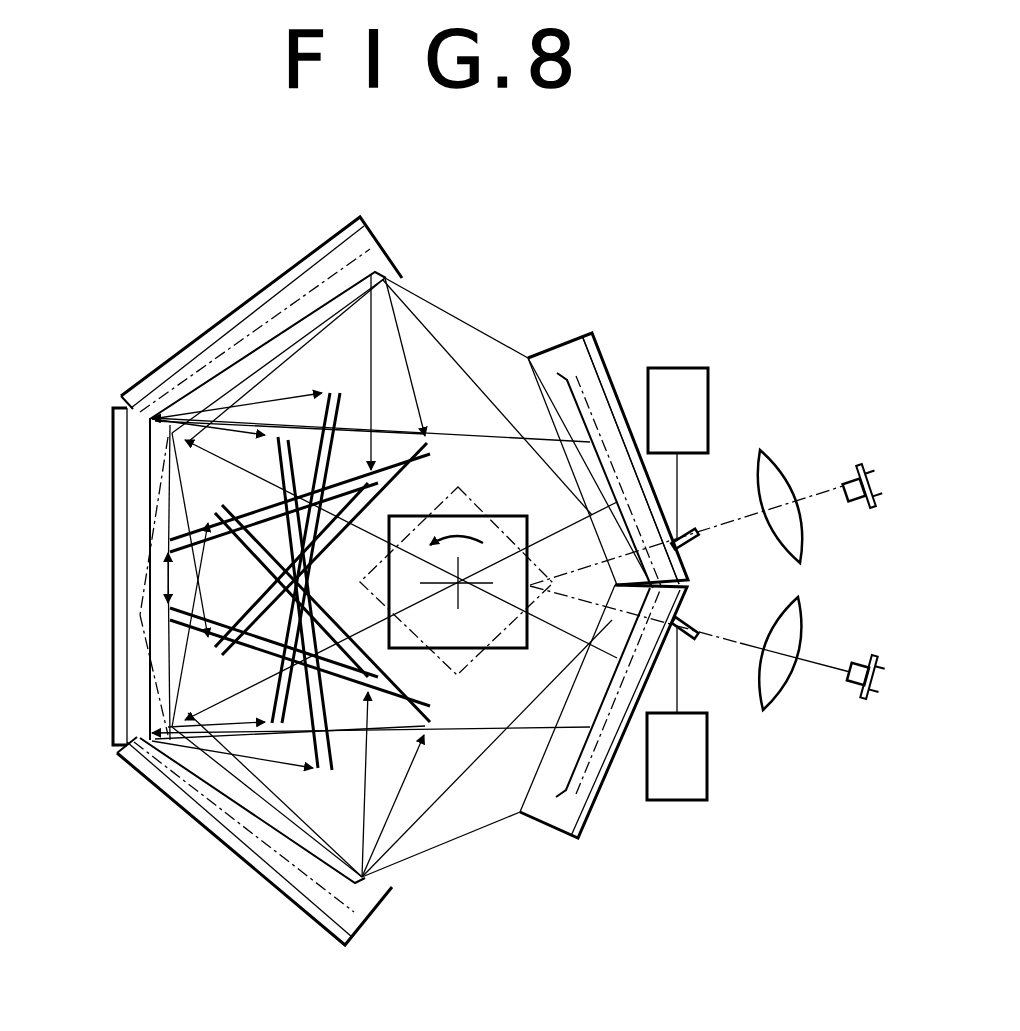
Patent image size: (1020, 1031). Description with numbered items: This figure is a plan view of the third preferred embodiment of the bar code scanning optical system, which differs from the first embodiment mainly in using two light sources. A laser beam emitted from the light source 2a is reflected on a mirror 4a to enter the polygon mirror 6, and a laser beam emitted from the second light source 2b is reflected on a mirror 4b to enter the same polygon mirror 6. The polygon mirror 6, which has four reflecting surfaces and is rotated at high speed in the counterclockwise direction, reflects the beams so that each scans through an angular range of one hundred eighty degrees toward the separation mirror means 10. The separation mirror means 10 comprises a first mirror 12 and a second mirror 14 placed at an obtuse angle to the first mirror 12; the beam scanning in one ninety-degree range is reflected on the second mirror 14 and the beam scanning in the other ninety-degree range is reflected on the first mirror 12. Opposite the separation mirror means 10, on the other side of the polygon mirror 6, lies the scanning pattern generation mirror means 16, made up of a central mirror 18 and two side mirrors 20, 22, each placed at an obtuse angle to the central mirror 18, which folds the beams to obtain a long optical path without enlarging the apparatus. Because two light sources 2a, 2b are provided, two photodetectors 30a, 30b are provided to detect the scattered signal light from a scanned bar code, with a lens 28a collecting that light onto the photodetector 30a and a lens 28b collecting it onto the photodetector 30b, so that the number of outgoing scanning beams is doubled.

The light source 2a is at (700, 367).
The light source 2b is at (708, 780).
The mirror 4a is at (700, 544).
The mirror 4b is at (699, 620).
The polygon mirror 6 is at (505, 515).
The separation mirror means 10 is at (660, 494).
The first mirror 12 is at (606, 368).
The second mirror 14 is at (588, 822).
The scanning pattern generation mirror means 16 is at (140, 380).
The central mirror 18 is at (113, 583).
The side mirror 20 is at (233, 310).
The side mirror 22 is at (172, 800).
The lens 28a is at (772, 456).
The lens 28b is at (790, 688).
The photodetector 30a is at (863, 503).
The photodetector 30b is at (872, 653).